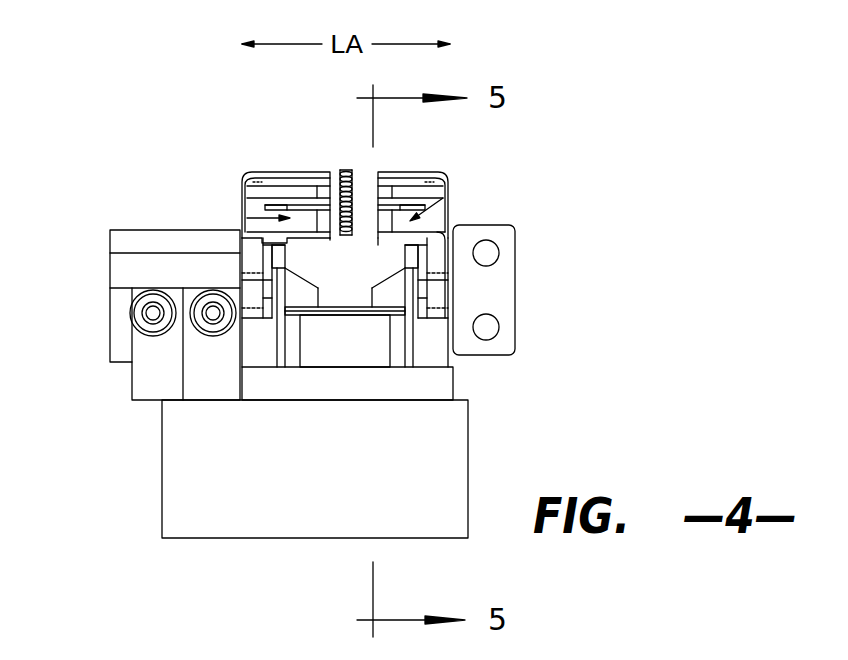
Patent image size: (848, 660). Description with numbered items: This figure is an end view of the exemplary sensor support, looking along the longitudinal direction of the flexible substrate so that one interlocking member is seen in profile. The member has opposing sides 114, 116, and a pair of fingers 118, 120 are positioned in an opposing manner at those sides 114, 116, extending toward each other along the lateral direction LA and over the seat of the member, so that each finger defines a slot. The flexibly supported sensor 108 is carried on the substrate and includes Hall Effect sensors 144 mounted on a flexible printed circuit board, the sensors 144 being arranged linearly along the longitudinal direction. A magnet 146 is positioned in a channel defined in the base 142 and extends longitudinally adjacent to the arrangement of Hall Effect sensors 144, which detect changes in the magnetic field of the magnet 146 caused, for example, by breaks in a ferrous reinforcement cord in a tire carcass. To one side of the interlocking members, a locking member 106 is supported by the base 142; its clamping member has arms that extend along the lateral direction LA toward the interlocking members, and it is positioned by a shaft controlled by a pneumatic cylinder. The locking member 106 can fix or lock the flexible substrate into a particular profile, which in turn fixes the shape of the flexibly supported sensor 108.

The locking member 106 is at (90, 270).
The side 114 is at (232, 167).
The side 116 is at (456, 168).
The finger 118 is at (247, 218).
The finger 120 is at (443, 198).
The flexibly supported sensor 108 is at (364, 200).
The Hall Effect sensors 144 is at (346, 170).
The base 142 is at (435, 385).
The magnet 146 is at (342, 350).